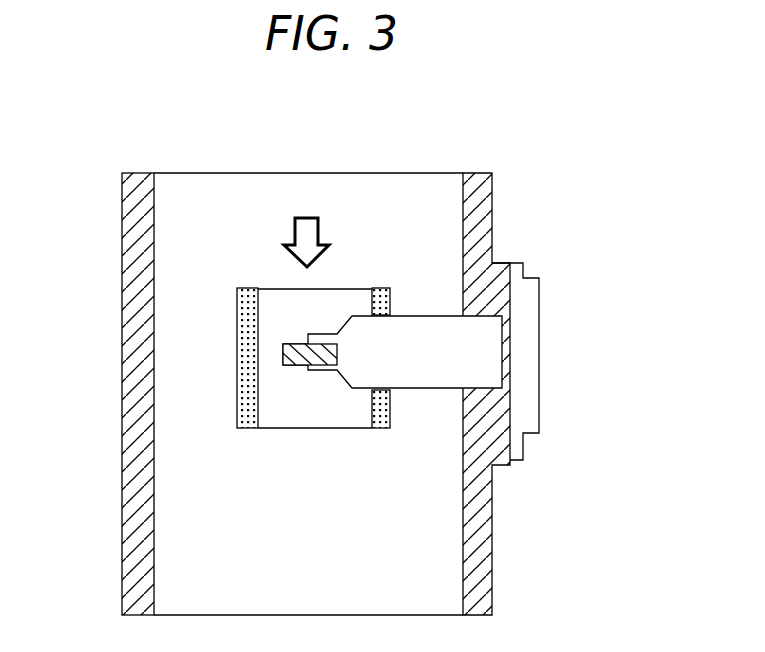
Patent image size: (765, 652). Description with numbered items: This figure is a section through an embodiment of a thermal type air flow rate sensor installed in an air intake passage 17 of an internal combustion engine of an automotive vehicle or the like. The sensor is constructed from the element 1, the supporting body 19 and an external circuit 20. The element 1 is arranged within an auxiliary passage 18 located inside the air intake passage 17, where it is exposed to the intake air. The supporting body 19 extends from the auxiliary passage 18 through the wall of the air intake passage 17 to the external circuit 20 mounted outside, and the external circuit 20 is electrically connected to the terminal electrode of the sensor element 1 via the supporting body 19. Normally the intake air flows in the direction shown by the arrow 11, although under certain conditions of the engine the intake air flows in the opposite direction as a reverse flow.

The element 1 is at (283, 358).
The direction of intake air flow 11 is at (305, 233).
The air intake passage 17 is at (137, 263).
The auxiliary passage 18 is at (238, 345).
The supporting body 19 is at (465, 343).
The external circuit 20 is at (520, 366).